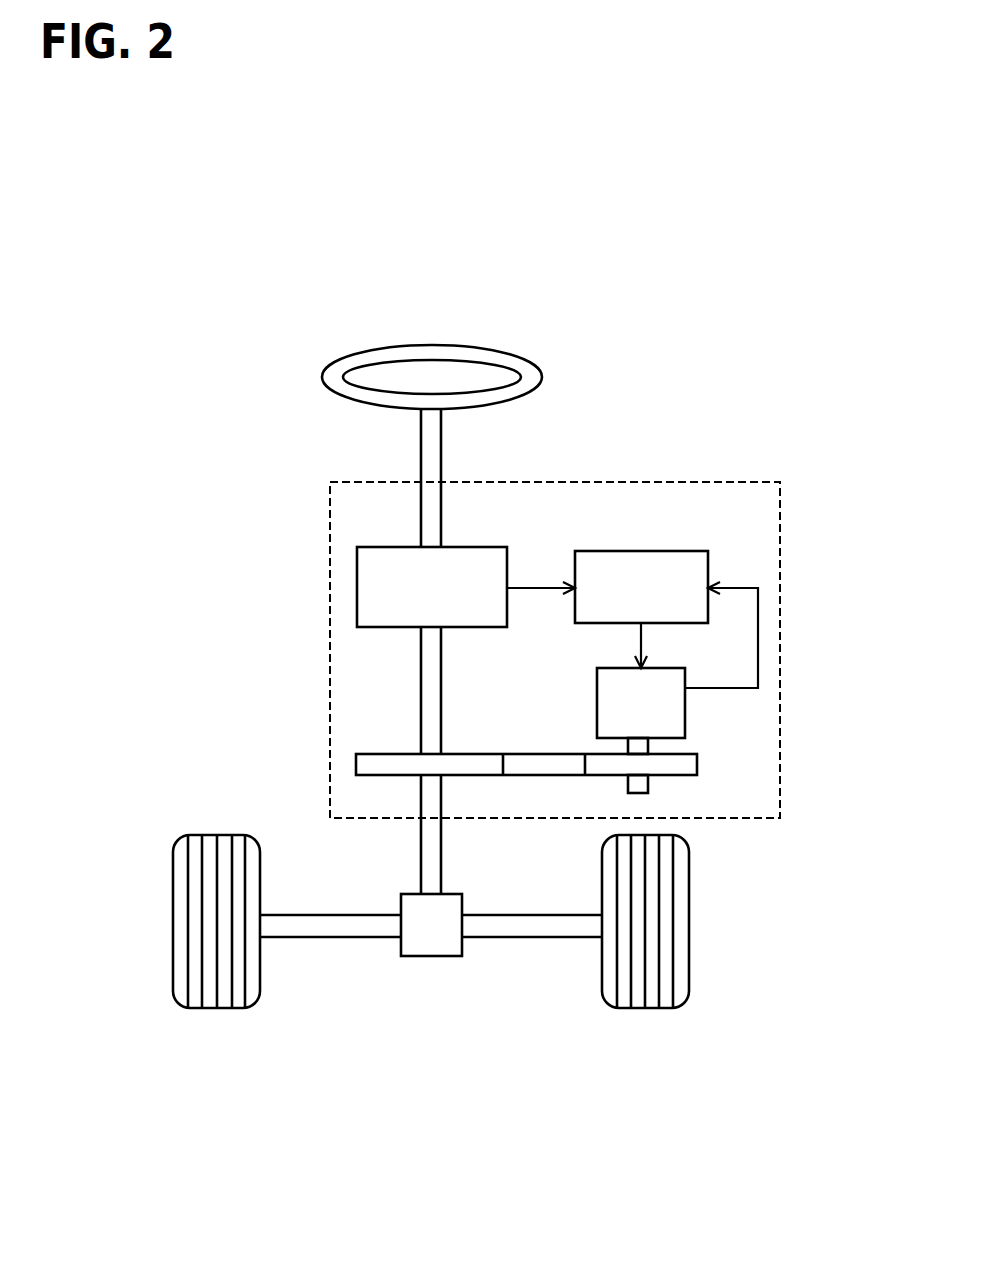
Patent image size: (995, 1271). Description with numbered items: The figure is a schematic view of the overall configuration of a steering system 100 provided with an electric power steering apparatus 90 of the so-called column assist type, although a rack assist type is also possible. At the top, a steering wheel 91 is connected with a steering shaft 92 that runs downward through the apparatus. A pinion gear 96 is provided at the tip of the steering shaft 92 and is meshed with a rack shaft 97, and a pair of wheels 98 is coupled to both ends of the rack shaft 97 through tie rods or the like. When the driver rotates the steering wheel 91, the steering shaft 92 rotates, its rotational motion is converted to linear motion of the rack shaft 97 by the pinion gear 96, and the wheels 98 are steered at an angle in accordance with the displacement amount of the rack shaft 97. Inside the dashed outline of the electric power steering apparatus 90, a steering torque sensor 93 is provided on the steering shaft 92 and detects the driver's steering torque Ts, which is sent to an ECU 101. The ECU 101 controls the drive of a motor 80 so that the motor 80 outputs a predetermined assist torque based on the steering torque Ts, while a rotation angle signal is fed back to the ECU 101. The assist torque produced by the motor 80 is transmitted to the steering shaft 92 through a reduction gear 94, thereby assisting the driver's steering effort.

The steering system 100 is at (357, 1065).
The steering wheel 91 is at (322, 378).
The steering shaft 92 is at (437, 458).
The electric power steering apparatus 90 is at (700, 482).
The steering torque sensor 93 is at (474, 547).
The ECU 101 is at (641, 551).
The motor 80 is at (685, 716).
The reduction gear 94 is at (683, 766).
The pinion gear 96 is at (423, 956).
The rack shaft 97 is at (325, 937).
The wheels 98 is at (232, 1008).